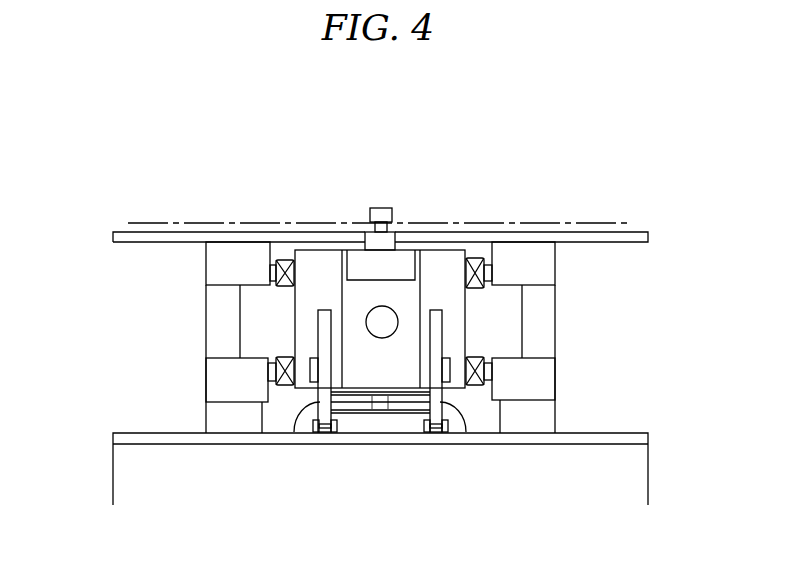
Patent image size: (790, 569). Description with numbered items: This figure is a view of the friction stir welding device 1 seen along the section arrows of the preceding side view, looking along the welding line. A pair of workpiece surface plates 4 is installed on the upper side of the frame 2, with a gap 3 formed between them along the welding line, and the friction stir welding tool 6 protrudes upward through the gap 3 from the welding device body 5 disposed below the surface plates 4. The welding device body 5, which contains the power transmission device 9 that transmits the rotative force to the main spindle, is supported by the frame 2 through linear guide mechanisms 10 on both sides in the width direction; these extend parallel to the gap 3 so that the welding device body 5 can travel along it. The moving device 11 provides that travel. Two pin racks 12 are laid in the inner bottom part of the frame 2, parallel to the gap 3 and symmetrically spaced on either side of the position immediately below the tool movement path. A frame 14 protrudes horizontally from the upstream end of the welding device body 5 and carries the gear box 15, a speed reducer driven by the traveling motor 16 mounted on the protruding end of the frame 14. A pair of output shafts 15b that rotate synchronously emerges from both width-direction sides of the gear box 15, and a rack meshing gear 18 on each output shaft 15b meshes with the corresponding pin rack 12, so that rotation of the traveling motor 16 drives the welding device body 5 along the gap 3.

The friction stir welding device 1 is at (375, 123).
The frame 2 is at (612, 432).
The gap 3 is at (397, 241).
The workpiece surface plate 4 is at (120, 230).
The welding device body 5 is at (473, 312).
The friction stir welding tool 6 is at (379, 208).
The power transmission device 9 is at (358, 414).
The linear guide mechanism 10 is at (282, 258).
The moving device 11 is at (432, 290).
The pin rack 12 is at (343, 430).
The frame 14 is at (360, 268).
The gear box 15 is at (353, 298).
The output shaft 15b is at (313, 358).
The traveling motor 16 is at (382, 322).
The rack meshing gear 18 is at (295, 432).